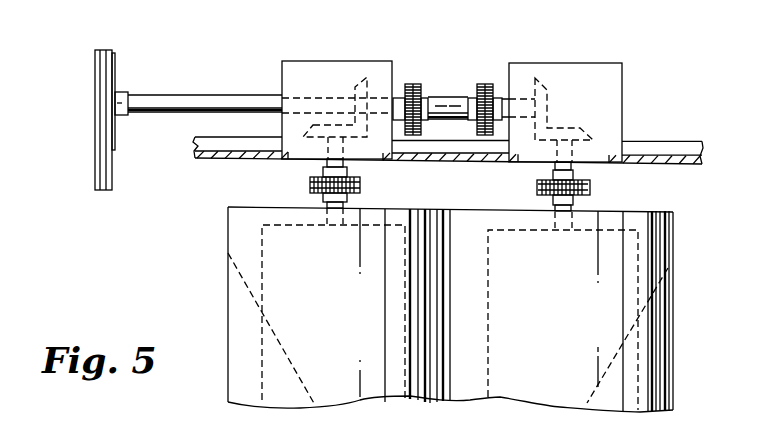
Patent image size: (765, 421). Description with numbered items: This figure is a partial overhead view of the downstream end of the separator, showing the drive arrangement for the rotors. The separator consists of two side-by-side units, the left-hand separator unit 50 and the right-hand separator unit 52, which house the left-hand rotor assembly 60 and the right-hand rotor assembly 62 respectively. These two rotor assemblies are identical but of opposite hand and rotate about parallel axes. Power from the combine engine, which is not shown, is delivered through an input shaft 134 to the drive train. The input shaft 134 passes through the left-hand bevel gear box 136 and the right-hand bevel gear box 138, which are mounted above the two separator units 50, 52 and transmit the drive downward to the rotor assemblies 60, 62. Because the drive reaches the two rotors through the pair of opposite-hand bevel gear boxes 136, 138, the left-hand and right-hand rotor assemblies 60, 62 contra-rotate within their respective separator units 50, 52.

The input shaft 134 is at (90, 124).
The right-hand bevel gear box 138 is at (334, 61).
The left-hand bevel gear box 136 is at (557, 63).
The right-hand rotor assembly 62 is at (262, 235).
The left-hand rotor assembly 60 is at (638, 253).
The right-hand separator unit 52 is at (222, 298).
The left-hand separator unit 50 is at (678, 325).